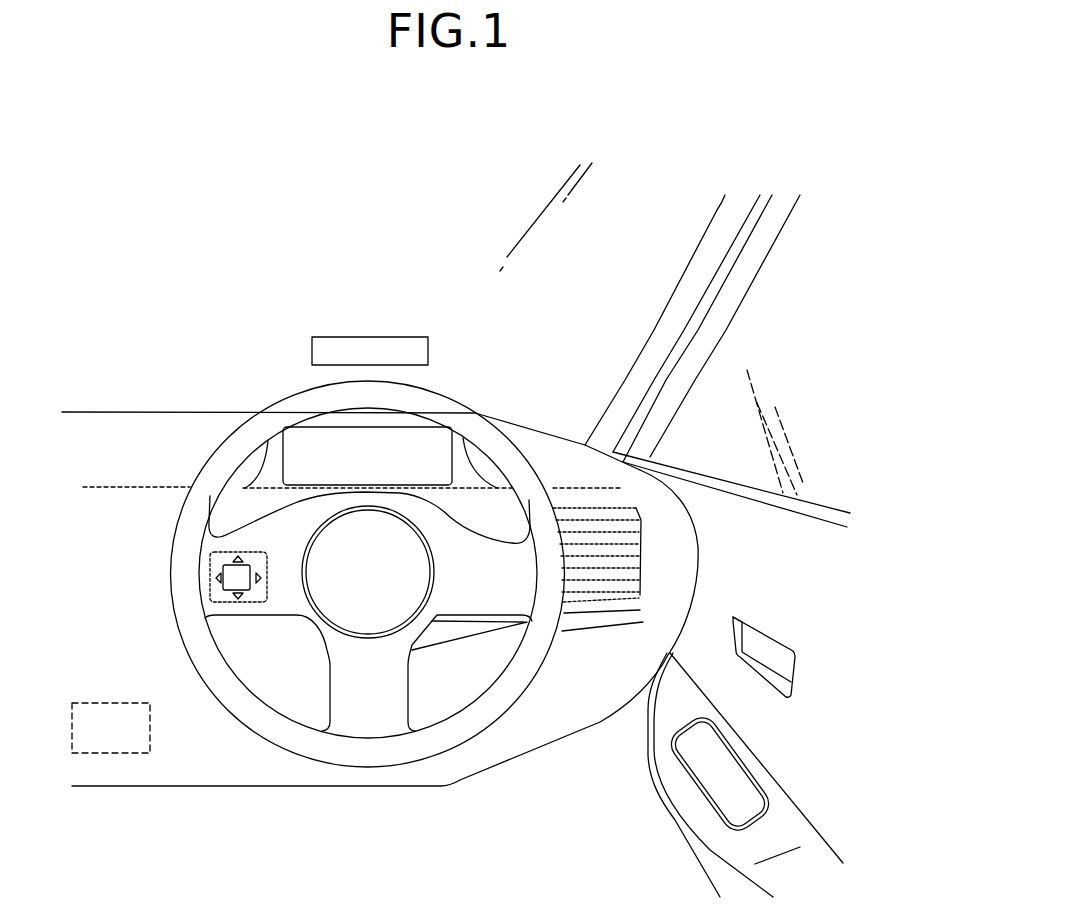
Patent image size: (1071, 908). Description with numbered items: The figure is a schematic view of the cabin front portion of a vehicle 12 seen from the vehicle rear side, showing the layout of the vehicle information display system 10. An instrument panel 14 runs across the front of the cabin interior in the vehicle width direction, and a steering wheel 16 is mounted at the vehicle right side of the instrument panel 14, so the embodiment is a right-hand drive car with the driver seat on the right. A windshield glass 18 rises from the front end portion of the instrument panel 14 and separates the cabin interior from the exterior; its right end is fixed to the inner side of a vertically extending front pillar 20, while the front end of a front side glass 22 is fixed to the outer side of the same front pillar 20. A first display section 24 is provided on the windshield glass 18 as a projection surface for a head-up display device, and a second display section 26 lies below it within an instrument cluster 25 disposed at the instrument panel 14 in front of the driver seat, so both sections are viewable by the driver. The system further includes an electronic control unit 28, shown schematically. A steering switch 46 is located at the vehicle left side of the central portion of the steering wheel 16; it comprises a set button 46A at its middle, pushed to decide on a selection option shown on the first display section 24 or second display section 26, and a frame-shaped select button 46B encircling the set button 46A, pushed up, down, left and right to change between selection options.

The vehicle information display system 10 is at (277, 275).
The vehicle 12 is at (313, 180).
The instrument panel 14 is at (552, 743).
The steering wheel 16 is at (536, 432).
The windshield glass 18 is at (607, 299).
The front pillar 20 is at (703, 233).
The front side glass 22 is at (822, 458).
The first display section 24 is at (372, 337).
The instrument cluster 25 is at (258, 468).
The second display section 26 is at (308, 449).
The electronic control unit 28 is at (103, 755).
The steering switch 46 is at (200, 590).
The set button 46A is at (250, 588).
The select button 46B is at (212, 603).